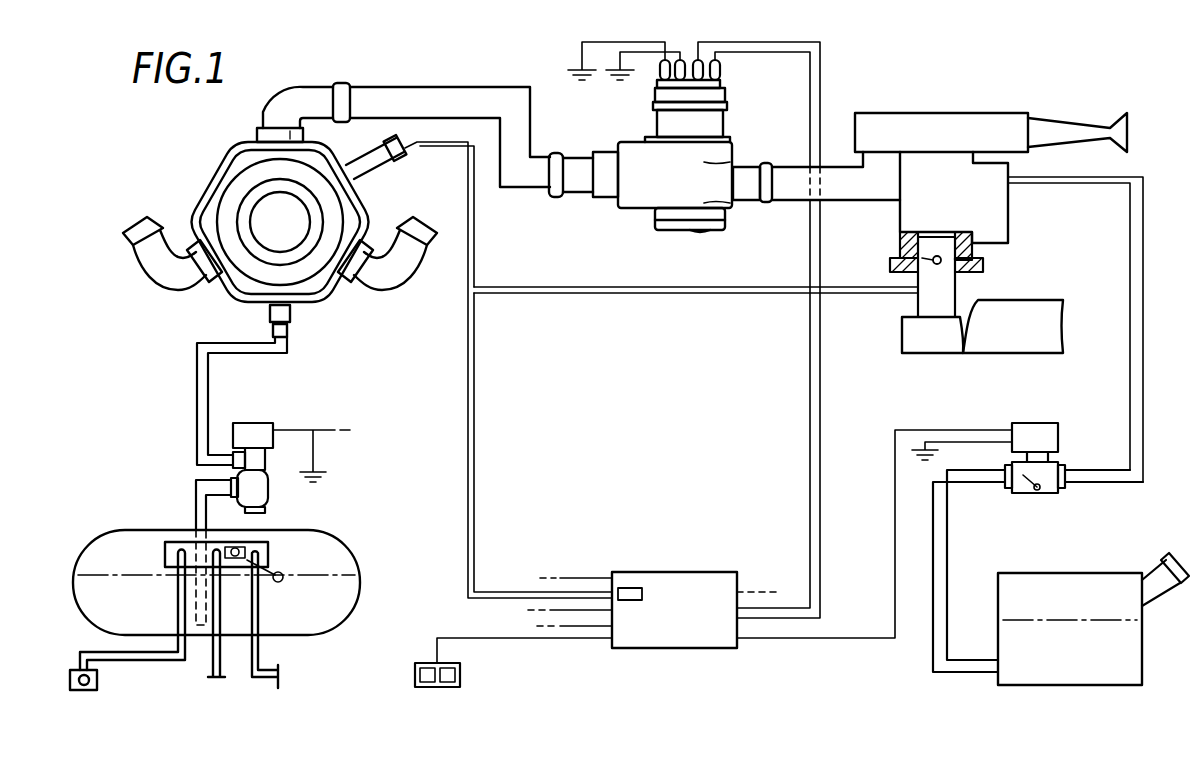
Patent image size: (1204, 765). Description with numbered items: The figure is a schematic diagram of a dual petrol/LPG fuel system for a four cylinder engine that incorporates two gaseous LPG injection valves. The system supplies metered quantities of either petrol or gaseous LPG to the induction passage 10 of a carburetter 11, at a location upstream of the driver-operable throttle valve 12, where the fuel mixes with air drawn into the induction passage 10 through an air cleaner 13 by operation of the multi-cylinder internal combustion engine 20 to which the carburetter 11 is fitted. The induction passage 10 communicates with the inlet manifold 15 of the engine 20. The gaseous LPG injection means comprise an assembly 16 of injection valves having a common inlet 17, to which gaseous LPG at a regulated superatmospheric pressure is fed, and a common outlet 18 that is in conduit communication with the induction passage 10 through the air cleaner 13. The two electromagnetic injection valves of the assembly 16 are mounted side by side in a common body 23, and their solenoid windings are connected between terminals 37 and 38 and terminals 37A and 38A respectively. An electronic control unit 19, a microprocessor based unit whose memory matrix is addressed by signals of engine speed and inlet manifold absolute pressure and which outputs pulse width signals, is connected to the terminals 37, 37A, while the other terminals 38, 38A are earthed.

The induction passage 10 is at (900, 246).
The carburetter 11 is at (975, 211).
The throttle valve 12 is at (941, 260).
The air cleaner 13 is at (928, 128).
The inlet manifold 15 is at (925, 330).
The assembly of injection valves 16 is at (682, 183).
The common inlet 17 is at (582, 172).
The common outlet 18 is at (750, 181).
The electronic control unit 19 is at (678, 600).
The multi-cylinder internal combustion engine 20 is at (1033, 325).
The common body 23 is at (718, 120).
The terminal 37 is at (715, 79).
The terminal 37A is at (700, 74).
The terminal 38 is at (663, 77).
The terminal 38A is at (678, 80).